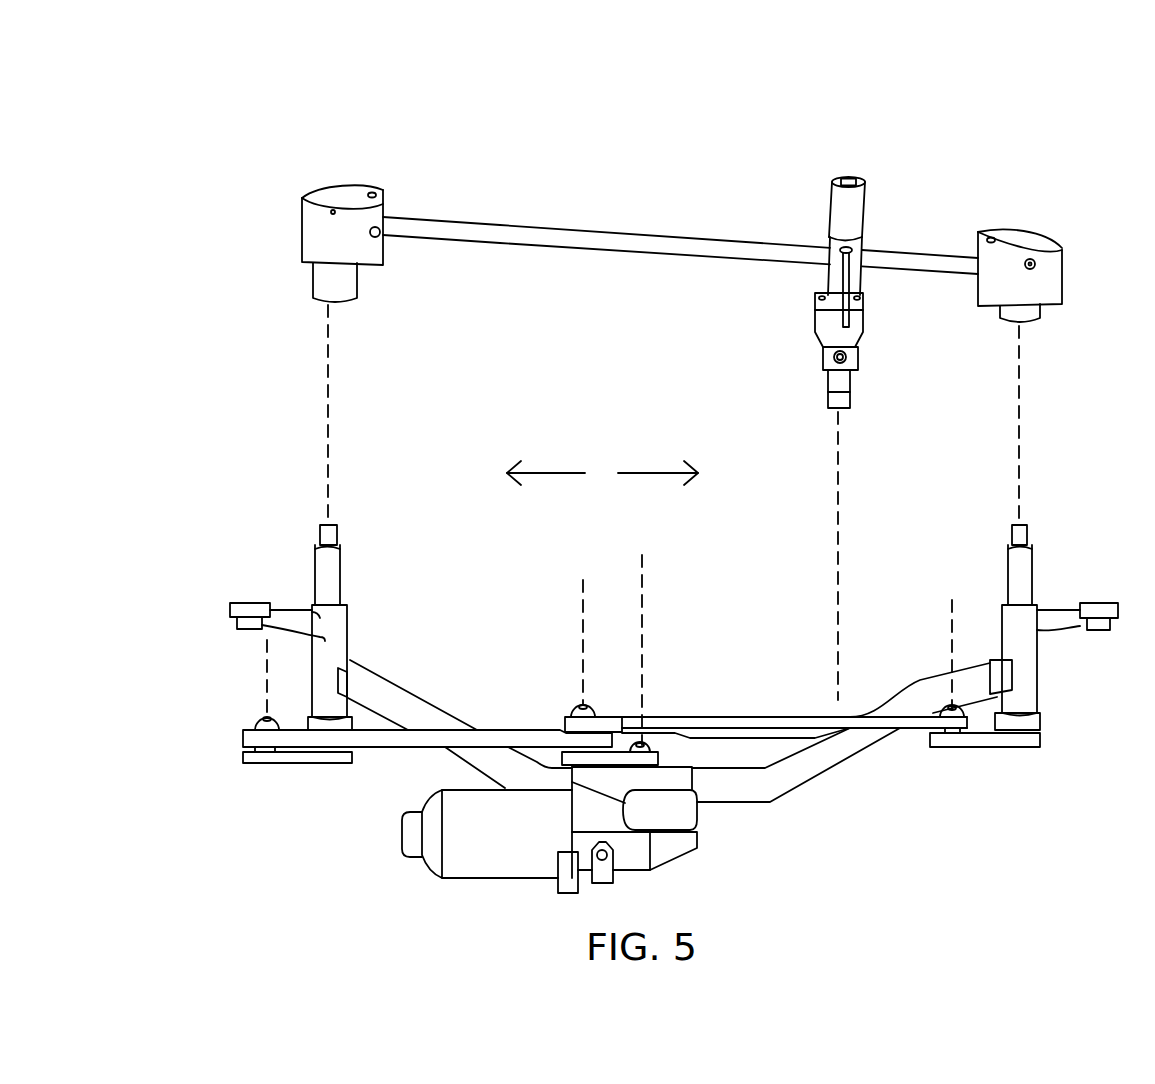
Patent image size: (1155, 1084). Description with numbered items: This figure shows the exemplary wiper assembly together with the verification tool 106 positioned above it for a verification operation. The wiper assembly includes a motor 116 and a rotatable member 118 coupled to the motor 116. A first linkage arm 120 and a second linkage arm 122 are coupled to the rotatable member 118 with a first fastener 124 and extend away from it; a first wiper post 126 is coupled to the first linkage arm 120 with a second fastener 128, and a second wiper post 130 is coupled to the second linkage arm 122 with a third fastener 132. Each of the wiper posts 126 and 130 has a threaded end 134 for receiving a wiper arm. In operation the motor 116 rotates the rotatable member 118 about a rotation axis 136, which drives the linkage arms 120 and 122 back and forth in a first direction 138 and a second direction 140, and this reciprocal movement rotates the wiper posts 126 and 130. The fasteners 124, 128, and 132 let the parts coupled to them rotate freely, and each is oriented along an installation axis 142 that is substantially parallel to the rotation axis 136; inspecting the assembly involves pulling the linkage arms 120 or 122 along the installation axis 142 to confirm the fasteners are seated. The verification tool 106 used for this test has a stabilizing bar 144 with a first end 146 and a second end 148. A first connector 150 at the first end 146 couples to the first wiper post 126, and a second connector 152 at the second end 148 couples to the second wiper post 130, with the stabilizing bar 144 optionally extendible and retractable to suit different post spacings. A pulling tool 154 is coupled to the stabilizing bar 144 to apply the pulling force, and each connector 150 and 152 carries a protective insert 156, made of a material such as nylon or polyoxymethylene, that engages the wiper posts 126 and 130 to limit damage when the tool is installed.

The verification tool 106 is at (1003, 108).
The motor 116 is at (472, 875).
The rotatable member 118 is at (636, 745).
The first linkage arm 120 is at (512, 725).
The second linkage arm 122 is at (755, 715).
The first fastener 124 is at (590, 705).
The first wiper post 126 is at (350, 618).
The second fastener 128 is at (262, 712).
The second wiper post 130 is at (1000, 602).
The third fastener 132 is at (920, 720).
The threaded end 134 is at (336, 532).
The rotation axis 136 is at (645, 590).
The first direction 138 is at (547, 473).
The second direction 140 is at (657, 473).
The installation axis 142 is at (262, 668).
The stabilizing bar 144 is at (907, 250).
The first end 146 is at (413, 180).
The second end 148 is at (962, 310).
The first connector 150 is at (332, 165).
The second connector 152 is at (1055, 205).
The pulling tool 154 is at (886, 152).
The protective insert 156 is at (340, 305).